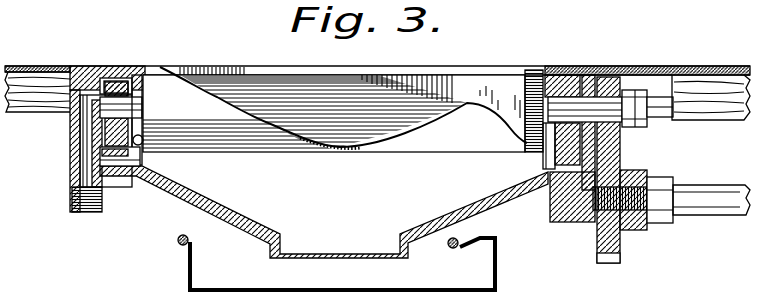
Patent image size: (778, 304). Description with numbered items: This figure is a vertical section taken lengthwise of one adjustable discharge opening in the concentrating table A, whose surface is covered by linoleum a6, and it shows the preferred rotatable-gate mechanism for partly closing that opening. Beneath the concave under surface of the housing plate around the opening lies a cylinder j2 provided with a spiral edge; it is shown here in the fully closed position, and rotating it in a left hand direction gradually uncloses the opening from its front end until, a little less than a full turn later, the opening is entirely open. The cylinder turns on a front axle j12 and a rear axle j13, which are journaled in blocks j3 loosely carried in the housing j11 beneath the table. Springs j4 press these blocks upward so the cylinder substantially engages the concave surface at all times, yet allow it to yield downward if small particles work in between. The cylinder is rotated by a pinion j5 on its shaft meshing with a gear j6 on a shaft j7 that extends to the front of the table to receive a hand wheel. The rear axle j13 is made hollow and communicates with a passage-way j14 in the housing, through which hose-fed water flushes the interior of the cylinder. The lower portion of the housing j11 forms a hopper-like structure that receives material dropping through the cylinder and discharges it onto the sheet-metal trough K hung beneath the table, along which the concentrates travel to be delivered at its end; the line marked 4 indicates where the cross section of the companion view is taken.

The linoleum a6 is at (47, 50).
The blocks j3 is at (592, 60).
The rear axle j13 is at (132, 100).
The passage-way j14 is at (100, 205).
The cylinder j2 is at (338, 122).
The section line 4— 4 is at (339, 75).
The housing j11 is at (462, 208).
The springs j4 is at (140, 157).
The trough K is at (336, 262).
The gear j6 is at (617, 248).
The axle j12 is at (560, 107).
The pinion j5 is at (620, 132).
The shaft j7 is at (727, 205).
The table A is at (707, 90).